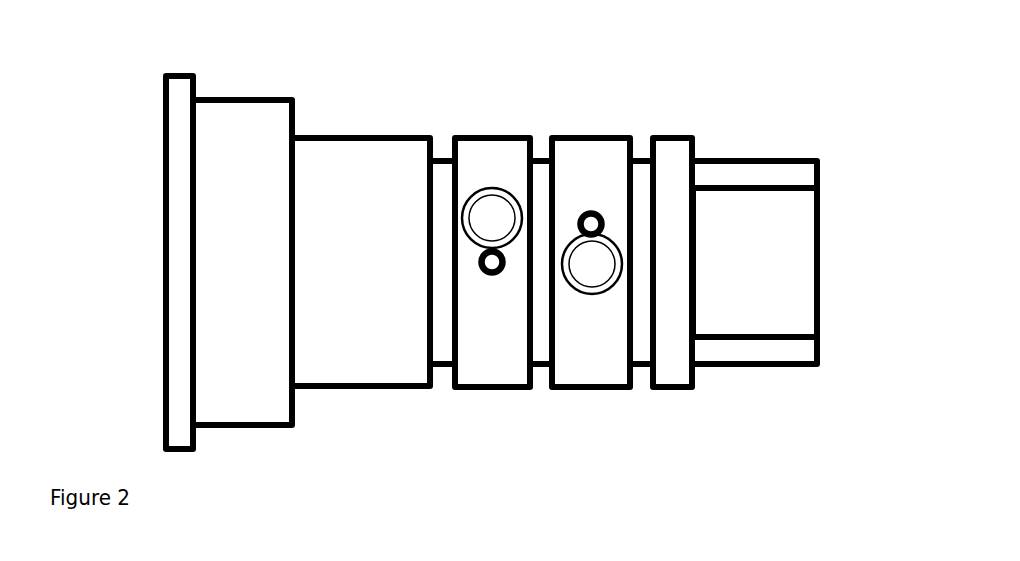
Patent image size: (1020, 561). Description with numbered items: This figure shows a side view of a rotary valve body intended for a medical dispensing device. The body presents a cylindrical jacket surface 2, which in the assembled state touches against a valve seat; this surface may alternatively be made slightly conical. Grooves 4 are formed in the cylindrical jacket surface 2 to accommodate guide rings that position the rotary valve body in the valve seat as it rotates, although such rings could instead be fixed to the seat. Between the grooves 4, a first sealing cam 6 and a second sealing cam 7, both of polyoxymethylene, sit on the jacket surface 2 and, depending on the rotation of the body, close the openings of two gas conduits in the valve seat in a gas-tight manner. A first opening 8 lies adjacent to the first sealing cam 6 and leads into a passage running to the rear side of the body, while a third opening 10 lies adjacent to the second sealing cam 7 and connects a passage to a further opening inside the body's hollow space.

The cylindrical jacket surface 2 is at (351, 197).
The grooves 4 is at (427, 137).
The first sealing cam 6 is at (465, 205).
The second sealing cam 7 is at (585, 247).
The first opening 8 is at (484, 246).
The third opening 10 is at (577, 210).